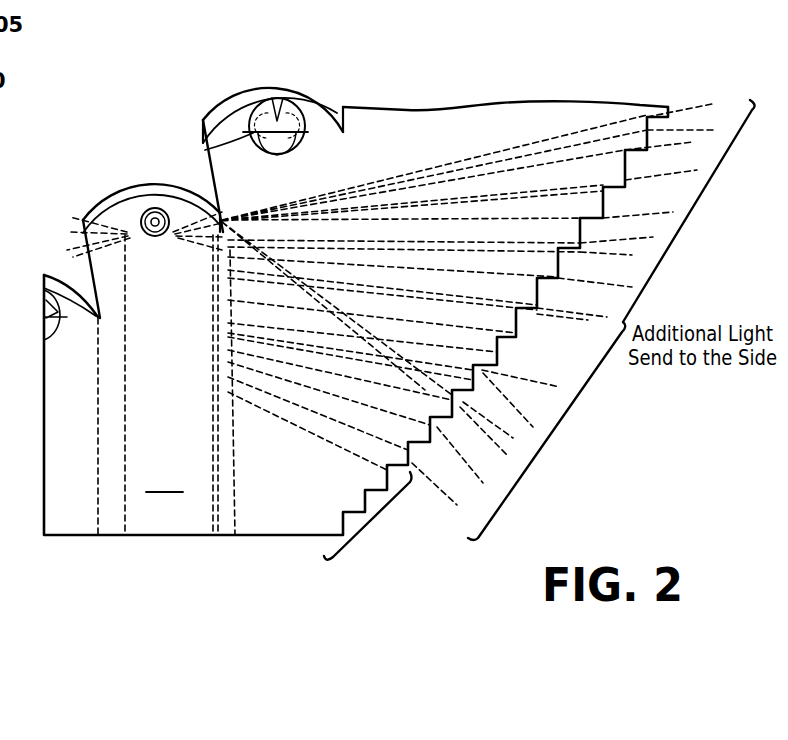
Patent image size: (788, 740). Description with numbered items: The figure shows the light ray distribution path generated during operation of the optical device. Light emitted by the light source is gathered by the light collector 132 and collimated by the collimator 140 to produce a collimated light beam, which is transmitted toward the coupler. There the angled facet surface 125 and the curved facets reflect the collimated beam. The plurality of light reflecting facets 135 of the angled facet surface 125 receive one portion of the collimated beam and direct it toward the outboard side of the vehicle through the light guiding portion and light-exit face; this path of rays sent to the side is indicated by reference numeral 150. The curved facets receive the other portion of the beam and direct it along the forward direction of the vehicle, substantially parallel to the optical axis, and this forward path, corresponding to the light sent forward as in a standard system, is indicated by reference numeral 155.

The angled facet surface 125 is at (85, 267).
The light collector 132 is at (292, 94).
The collimator 140 is at (205, 150).
The path of light beam reflected from angled facets 150 is at (423, 207).
The path of light beam reflected from curved facets 155 is at (238, 543).
The light reflecting facets 135 is at (372, 542).